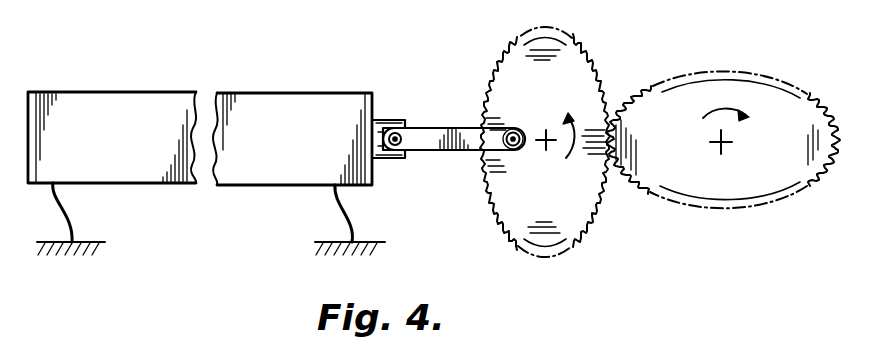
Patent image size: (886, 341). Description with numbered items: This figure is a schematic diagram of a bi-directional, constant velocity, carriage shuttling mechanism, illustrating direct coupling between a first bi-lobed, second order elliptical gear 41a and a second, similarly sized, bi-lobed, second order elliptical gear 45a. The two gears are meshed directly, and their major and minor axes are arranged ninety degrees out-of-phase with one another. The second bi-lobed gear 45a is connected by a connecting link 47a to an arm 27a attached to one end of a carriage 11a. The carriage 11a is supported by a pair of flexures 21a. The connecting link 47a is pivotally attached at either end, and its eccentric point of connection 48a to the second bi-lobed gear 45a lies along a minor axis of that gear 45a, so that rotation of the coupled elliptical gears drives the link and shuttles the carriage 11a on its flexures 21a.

The carriage 11a is at (288, 103).
The flexures 21a is at (67, 213).
The arm 27a is at (385, 120).
The connecting link 47a is at (450, 152).
The eccentric point of connection 48a is at (514, 152).
The second bi-lobed, second order elliptical gear 45a is at (566, 211).
The first bi-lobed, second order elliptical gear 41a is at (773, 177).